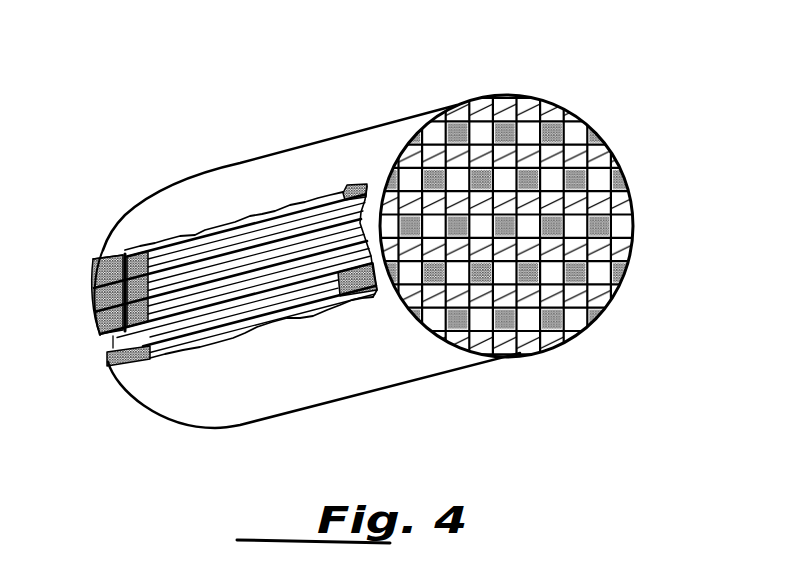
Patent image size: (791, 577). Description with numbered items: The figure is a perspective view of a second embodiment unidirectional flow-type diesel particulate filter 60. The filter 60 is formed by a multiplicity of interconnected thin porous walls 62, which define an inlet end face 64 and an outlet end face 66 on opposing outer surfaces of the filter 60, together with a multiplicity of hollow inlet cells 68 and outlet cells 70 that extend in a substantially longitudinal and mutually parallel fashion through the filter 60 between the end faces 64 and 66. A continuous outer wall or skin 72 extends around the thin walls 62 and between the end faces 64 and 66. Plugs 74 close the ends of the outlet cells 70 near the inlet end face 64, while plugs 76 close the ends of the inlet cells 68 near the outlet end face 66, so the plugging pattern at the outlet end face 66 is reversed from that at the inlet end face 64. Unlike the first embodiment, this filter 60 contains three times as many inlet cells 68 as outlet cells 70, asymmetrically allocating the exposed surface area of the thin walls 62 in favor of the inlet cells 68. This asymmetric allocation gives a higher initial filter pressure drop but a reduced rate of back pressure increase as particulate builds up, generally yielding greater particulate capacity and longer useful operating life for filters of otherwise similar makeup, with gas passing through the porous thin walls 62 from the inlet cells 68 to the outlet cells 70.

The unidirectional flow-type diesel particulate filter 60 is at (465, 373).
The thin porous walls 62 is at (248, 322).
The inlet end face 64 is at (617, 143).
The outlet end face 66 is at (124, 397).
The inlet cells 68 is at (331, 260).
The outlet cells 70 is at (112, 254).
The outer wall or skin 72 is at (322, 360).
The plugs 74 is at (368, 192).
The plug 76 is at (92, 315).